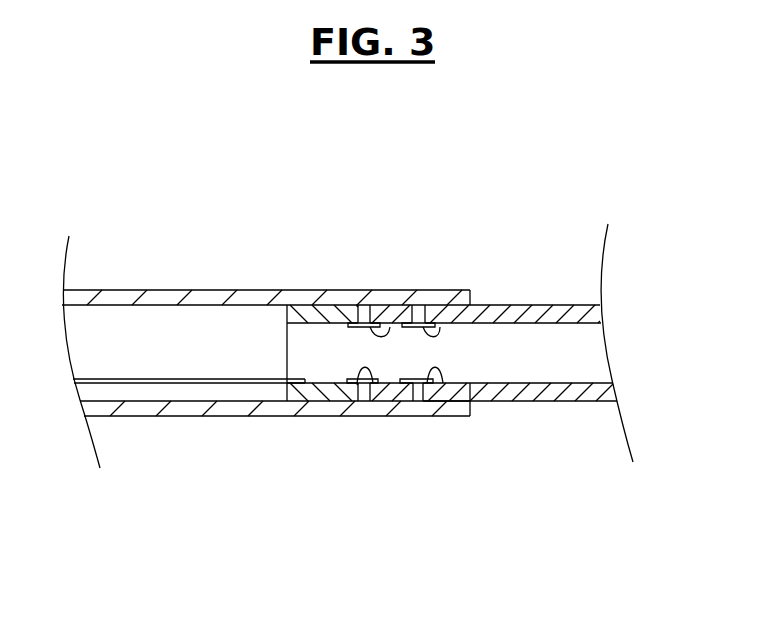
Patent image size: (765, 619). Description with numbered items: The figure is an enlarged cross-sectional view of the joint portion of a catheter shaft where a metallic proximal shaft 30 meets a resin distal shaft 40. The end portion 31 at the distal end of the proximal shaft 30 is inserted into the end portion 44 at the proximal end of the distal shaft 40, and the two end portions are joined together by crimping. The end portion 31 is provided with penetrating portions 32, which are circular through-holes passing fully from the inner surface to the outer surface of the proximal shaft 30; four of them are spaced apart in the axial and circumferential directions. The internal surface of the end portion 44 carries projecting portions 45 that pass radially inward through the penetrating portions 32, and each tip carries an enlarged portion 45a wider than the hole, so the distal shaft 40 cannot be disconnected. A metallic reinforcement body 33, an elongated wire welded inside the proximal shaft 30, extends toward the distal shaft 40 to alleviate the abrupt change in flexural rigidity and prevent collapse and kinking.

The proximal shaft 30 is at (522, 305).
The end portion 31 is at (450, 292).
The penetrating portions 32 is at (348, 325).
The reinforcement body 33 is at (287, 376).
The distal shaft 40 is at (167, 289).
The end portion 44 is at (295, 290).
The projecting portions 45 is at (378, 322).
The enlarged portion 45a is at (425, 320).